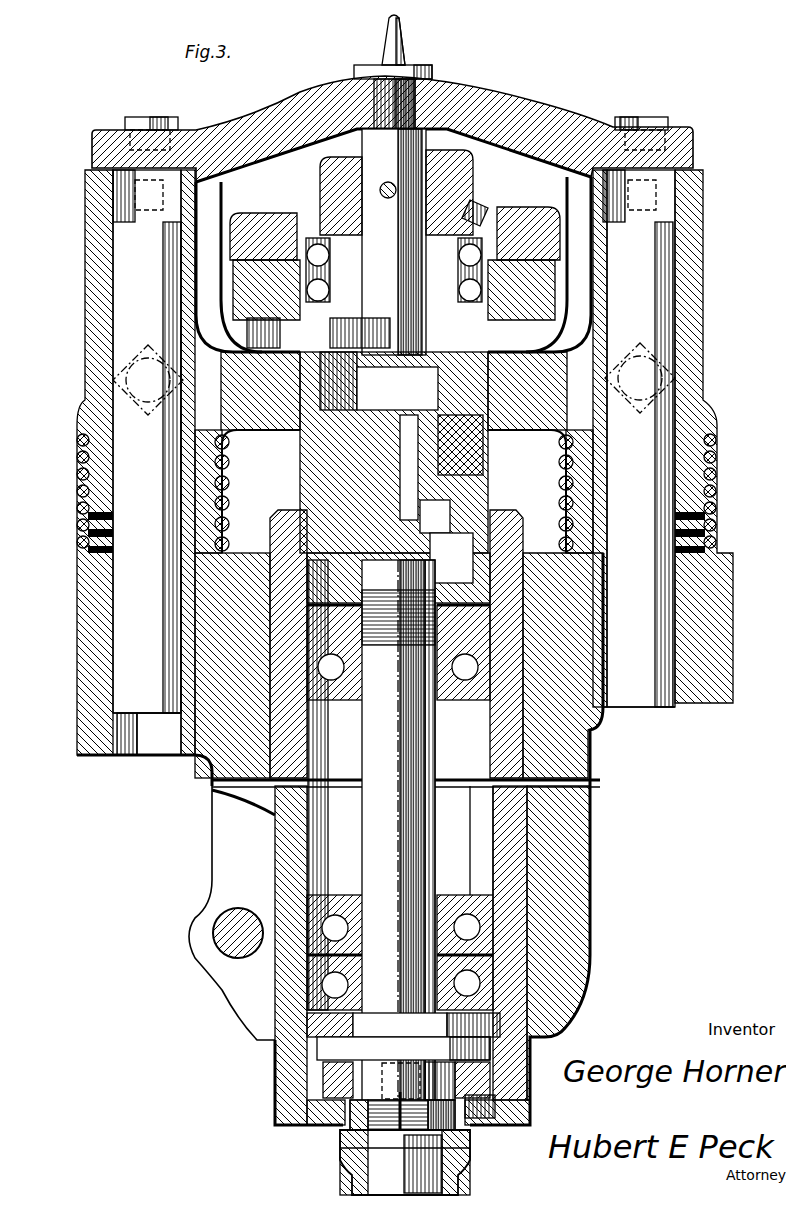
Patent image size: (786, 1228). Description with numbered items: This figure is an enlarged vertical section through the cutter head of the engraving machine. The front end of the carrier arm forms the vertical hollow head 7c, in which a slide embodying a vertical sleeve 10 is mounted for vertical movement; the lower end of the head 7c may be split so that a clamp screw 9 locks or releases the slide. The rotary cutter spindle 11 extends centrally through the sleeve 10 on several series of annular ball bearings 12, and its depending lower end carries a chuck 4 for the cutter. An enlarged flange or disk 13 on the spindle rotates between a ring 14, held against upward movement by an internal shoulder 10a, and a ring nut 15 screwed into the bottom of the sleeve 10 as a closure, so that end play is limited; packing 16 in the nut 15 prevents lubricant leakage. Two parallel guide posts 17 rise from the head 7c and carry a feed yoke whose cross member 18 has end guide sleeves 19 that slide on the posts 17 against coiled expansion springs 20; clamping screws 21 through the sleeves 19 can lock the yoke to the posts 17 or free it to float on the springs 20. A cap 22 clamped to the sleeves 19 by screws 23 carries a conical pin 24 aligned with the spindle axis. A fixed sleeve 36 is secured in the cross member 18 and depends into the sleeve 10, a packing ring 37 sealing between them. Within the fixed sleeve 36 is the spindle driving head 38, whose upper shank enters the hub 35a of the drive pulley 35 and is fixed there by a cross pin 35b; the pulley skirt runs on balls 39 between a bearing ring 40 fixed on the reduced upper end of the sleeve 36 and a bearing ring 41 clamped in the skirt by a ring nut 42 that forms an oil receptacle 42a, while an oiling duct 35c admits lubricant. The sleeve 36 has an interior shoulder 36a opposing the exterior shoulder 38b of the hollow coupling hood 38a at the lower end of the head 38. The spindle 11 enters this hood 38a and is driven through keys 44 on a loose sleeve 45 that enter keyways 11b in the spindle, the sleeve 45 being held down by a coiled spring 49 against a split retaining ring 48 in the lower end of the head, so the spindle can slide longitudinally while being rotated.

The chuck 4 is at (462, 1152).
The vertical hollow boss, housing or head 7c is at (585, 896).
The clamp screw 9 is at (228, 931).
The vertical sleeve 10 is at (510, 731).
The internal shoulder 10a is at (503, 998).
The rotary cutter spindle 11 is at (398, 835).
The elongated keyways 11b is at (240, 493).
The annular ball bearings 12 is at (455, 669).
The annular flange or disk 13 is at (372, 1050).
The ring 14 is at (298, 1027).
The ring nut 15 is at (316, 1138).
The packing 16 is at (526, 1055).
The guide studs or posts 17 is at (125, 416).
The cross member 18 is at (545, 393).
The end guide sleeves 19 is at (100, 319).
The coiled expansion springs 20 is at (77, 494).
The set or clamping screws 21 is at (140, 374).
The cap 22 is at (519, 118).
The screws 23 is at (152, 118).
The fixed vertical pin 24 is at (403, 42).
The drive pulley 35 is at (531, 233).
The hub 35a is at (473, 173).
The cross pin 35b is at (397, 115).
The oiling duct 35c is at (481, 207).
The fixed sleeve 36 is at (549, 493).
The interior annular downwardly facing shoulder 36a is at (397, 388).
The packing ring 37 is at (330, 520).
The spindle driving head 38 is at (394, 242).
The hollow coupling head or hood 38a is at (470, 481).
The exterior annular upwardly facing shoulder 38b is at (369, 314).
The balls 39 is at (316, 244).
The bearing ring 40 is at (327, 233).
The bearing ring 41 is at (290, 258).
The ring nut 42 is at (273, 305).
The oil retaining receptacle 42a is at (520, 308).
The keys 44 is at (370, 485).
The sleeve 45 is at (478, 506).
The retaining ring 48 is at (448, 537).
The coiled spring 49 is at (370, 382).